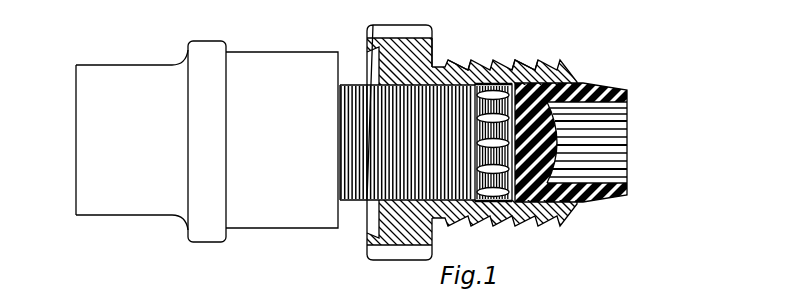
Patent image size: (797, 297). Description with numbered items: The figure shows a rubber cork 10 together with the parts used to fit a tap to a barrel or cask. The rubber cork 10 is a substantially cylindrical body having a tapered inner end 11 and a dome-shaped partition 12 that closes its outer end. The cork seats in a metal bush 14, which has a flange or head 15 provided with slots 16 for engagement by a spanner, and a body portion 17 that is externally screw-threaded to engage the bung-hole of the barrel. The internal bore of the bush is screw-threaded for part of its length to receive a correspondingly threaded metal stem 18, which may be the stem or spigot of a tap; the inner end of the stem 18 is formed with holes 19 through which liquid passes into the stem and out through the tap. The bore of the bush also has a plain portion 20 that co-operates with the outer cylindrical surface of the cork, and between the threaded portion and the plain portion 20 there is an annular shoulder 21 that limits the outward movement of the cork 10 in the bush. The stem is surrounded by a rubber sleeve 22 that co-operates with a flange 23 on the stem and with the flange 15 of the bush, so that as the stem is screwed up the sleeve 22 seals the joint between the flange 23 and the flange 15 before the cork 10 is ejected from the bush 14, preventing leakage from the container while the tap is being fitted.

The rubber cork 10 is at (553, 80).
The tapered inner end 11 is at (593, 85).
The dome-shaped partition 12 is at (546, 150).
The metal bush 14 is at (462, 222).
The flange or head 15 is at (432, 49).
The slots 16 is at (372, 33).
The body portion 17 is at (508, 77).
The metal stem 18 is at (353, 85).
The holes 19 is at (505, 124).
The plain portion 20 is at (531, 80).
The annular shoulder 21 is at (468, 78).
The rubber sleeve 22 is at (303, 56).
The flange 23 is at (228, 43).